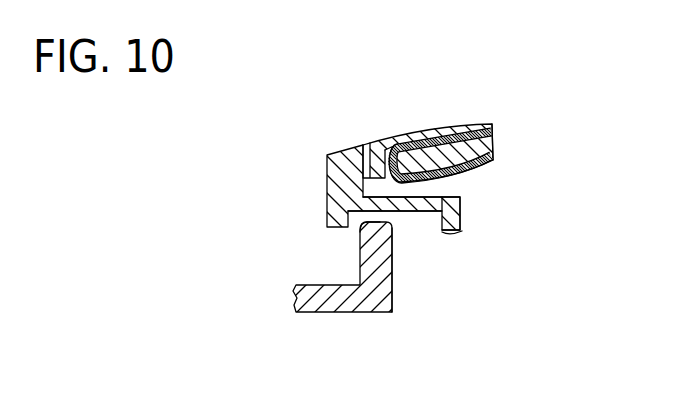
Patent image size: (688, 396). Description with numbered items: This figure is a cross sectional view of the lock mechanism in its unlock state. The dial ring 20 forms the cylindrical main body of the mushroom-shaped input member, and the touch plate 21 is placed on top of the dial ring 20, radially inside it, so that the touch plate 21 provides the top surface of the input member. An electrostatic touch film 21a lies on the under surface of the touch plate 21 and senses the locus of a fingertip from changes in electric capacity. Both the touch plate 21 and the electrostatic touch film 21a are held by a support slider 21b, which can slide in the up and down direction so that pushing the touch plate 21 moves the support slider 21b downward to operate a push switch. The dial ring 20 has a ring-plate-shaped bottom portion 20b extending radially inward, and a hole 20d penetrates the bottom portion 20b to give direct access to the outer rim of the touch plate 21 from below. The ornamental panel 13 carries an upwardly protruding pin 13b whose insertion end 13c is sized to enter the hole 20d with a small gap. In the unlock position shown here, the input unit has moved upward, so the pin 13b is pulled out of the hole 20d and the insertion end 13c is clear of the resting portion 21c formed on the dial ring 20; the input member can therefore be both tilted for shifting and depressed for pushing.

The ornamental panel 13 is at (333, 300).
The pin 13b is at (392, 262).
The insertion end 13c is at (362, 223).
The dial ring 20 is at (347, 167).
The bottom portion 20b is at (442, 196).
The hole 20d is at (387, 204).
The touch plate 21 is at (453, 124).
The electrostatic touch film 21a is at (416, 141).
The support slider 21b is at (473, 145).
The resting portion 21c is at (363, 180).